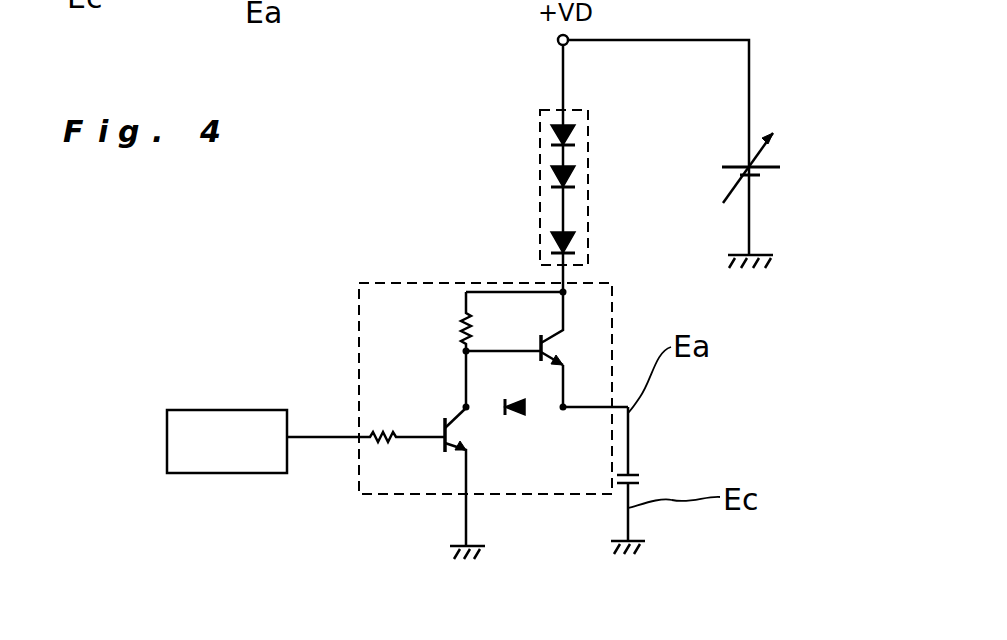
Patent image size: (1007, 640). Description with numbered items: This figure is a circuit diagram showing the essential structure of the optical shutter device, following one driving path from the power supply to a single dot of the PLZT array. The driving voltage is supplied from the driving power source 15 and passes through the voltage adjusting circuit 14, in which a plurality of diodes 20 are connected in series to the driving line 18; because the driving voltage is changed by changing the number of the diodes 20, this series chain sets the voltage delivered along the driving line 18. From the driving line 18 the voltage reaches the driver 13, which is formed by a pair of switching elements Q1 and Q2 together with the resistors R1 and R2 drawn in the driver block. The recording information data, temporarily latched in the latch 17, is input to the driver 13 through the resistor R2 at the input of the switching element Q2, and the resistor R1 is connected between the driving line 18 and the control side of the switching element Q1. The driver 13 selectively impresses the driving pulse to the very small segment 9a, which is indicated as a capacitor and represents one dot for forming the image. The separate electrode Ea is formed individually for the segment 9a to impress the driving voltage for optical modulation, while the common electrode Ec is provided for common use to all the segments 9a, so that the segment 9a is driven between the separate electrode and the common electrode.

The segment 9a is at (632, 472).
The driver 13 is at (435, 414).
The voltage adjusting circuit 14 is at (540, 110).
The driving power source 15 is at (765, 168).
The latch 17 is at (167, 425).
The driving line 18 is at (562, 276).
The diodes 20 is at (553, 237).
The resistor R1 is at (444, 349).
The resistor R2 is at (366, 420).
The switching element Q1 is at (574, 350).
The switching element Q2 is at (479, 477).